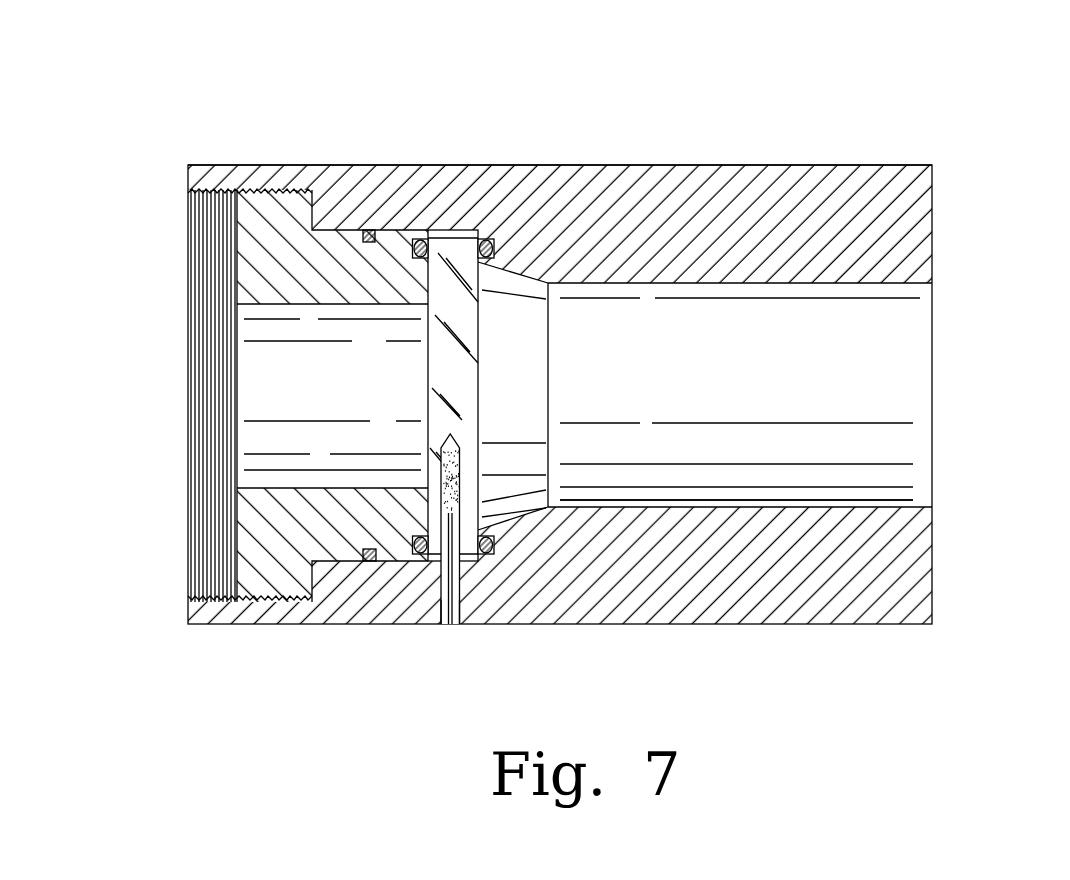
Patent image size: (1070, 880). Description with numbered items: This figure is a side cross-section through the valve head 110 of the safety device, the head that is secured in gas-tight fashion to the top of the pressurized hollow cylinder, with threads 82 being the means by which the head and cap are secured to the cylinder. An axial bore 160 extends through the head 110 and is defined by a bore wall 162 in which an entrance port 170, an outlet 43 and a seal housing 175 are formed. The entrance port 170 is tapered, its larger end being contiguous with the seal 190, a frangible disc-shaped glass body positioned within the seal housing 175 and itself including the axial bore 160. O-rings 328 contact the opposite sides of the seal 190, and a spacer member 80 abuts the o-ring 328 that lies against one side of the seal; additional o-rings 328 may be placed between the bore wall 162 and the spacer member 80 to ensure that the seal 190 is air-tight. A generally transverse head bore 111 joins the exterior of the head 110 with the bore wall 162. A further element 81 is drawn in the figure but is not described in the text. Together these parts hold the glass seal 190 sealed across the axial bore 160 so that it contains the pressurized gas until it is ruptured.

The valve head 110 is at (968, 120).
The axial bore 160 is at (188, 567).
The bore wall 162 is at (752, 283).
The outlet 43 is at (920, 507).
The threads 82 is at (262, 188).
The spacer member 80 is at (332, 562).
The threaded insert body 81 is at (430, 278).
The o-rings 328 is at (373, 232).
The seal 190 is at (465, 386).
The entrance port 170 is at (535, 433).
The seal housing 175 is at (441, 560).
The head bore 111 is at (460, 600).